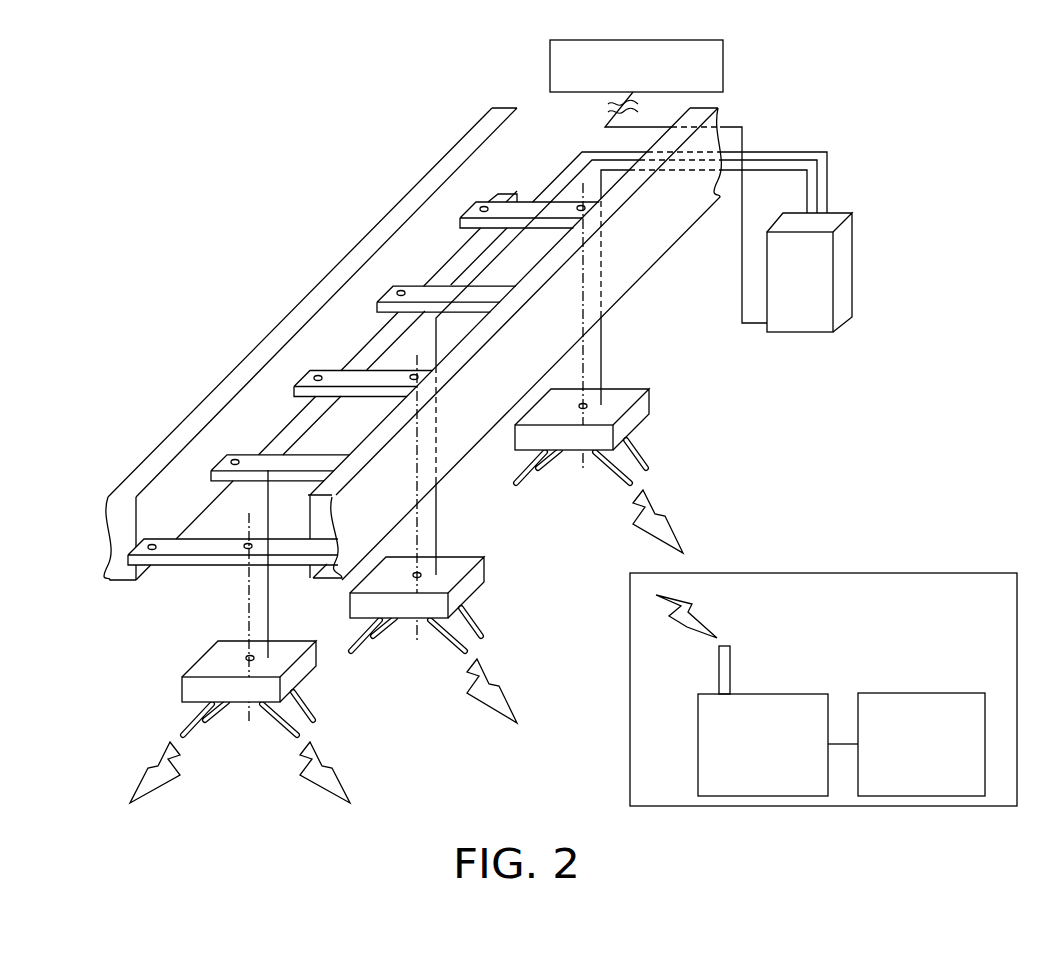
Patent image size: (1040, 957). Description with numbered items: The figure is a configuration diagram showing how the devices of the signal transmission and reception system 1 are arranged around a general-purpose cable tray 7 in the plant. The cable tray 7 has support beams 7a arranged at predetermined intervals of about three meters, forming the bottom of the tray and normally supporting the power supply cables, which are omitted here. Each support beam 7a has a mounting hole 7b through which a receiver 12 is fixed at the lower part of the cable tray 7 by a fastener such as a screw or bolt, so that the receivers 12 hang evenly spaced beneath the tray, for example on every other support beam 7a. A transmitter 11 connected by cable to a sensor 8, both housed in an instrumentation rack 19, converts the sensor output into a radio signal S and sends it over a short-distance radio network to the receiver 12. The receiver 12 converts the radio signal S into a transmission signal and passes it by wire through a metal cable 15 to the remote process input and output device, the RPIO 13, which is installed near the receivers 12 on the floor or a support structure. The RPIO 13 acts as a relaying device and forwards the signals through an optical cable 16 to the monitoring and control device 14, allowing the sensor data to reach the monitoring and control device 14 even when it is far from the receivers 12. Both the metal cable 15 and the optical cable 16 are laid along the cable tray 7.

The signal transmission and reception system 1 is at (761, 437).
The cable tray 7 is at (300, 301).
The support beam 7a is at (497, 195).
The mounting hole 7b is at (579, 204).
The sensor 8 is at (922, 693).
The transmitter 11 is at (778, 694).
The receiver 12 is at (182, 690).
The remote process input and output device (RPIO) 13 is at (840, 213).
The monitoring and control device 14 is at (723, 63).
The metal cable 15 is at (270, 610).
The optical cable 16 is at (742, 283).
The instrumentation rack 19 is at (915, 573).
The radio signal S is at (150, 768).